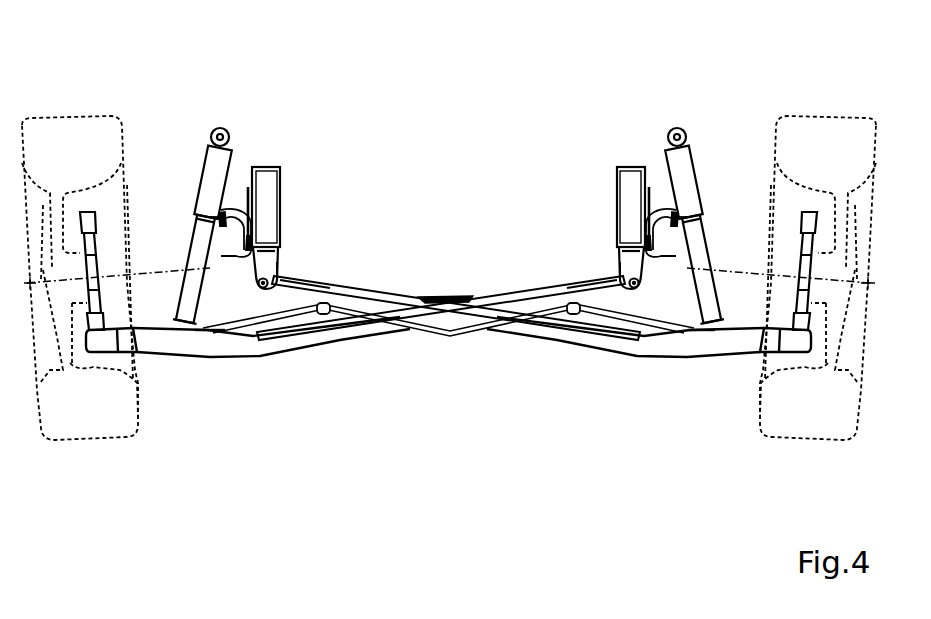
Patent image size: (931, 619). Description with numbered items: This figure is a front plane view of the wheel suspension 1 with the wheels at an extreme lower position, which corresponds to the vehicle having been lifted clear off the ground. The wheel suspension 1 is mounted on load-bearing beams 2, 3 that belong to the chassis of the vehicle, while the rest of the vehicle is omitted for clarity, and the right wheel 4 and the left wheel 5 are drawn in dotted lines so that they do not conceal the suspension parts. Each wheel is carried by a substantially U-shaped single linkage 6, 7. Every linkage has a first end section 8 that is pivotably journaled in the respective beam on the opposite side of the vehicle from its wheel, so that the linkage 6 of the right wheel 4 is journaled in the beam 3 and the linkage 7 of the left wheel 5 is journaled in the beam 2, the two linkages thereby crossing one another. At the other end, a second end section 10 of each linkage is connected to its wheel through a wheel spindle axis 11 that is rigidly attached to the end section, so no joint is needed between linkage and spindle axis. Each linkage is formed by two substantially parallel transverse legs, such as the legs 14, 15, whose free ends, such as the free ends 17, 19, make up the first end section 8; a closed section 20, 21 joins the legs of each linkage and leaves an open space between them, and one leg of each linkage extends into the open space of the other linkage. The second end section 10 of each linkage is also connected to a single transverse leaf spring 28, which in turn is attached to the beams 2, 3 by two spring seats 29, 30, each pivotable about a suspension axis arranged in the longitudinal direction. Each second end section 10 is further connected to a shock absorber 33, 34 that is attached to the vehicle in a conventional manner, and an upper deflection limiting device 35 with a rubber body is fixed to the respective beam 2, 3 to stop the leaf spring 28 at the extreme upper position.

The wheel suspension 1 is at (300, 72).
The load-bearing beam 2 is at (268, 164).
The load-bearing beam 3 is at (630, 164).
The right wheel 4 is at (88, 113).
The left wheel 5 is at (830, 114).
The linkage 6 is at (248, 350).
The linkage 7 is at (659, 348).
The first end section 8 is at (283, 288).
The second end section 10 is at (145, 357).
The wheel spindle axis 11 is at (93, 252).
The leg 14 is at (375, 325).
The leg 15 is at (490, 324).
The free end 17 is at (613, 270).
The free end 19 is at (284, 268).
The closed section 20 is at (703, 360).
The closed section 21 is at (206, 350).
The leaf spring 28 is at (447, 293).
The spring seat 29 is at (610, 272).
The spring seat 30 is at (302, 272).
The shock absorber 33 is at (695, 160).
The shock absorber 34 is at (201, 164).
The upper deflection limiting device 35 is at (223, 260).